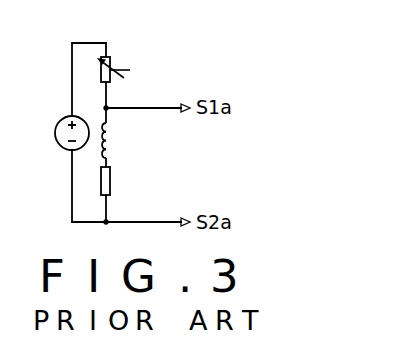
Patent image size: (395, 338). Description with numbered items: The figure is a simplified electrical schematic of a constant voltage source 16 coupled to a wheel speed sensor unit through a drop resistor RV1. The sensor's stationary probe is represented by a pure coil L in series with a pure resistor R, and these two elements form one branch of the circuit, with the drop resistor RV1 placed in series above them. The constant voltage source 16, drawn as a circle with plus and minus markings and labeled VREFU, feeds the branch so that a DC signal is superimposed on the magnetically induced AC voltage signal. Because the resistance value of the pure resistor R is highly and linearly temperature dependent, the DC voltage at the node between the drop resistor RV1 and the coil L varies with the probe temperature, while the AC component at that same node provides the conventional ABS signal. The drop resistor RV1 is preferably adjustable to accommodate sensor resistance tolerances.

The constant voltage source 16 is at (56, 131).
The drop resistor RV1 is at (126, 55).
The pure coil L is at (112, 140).
The pure resistor R is at (115, 179).
The reference voltage VREFU is at (34, 107).